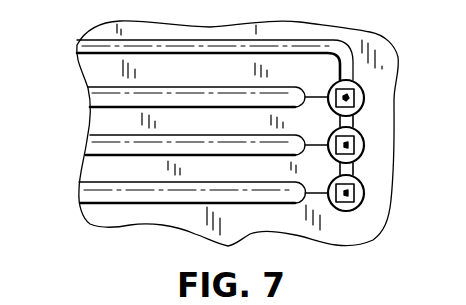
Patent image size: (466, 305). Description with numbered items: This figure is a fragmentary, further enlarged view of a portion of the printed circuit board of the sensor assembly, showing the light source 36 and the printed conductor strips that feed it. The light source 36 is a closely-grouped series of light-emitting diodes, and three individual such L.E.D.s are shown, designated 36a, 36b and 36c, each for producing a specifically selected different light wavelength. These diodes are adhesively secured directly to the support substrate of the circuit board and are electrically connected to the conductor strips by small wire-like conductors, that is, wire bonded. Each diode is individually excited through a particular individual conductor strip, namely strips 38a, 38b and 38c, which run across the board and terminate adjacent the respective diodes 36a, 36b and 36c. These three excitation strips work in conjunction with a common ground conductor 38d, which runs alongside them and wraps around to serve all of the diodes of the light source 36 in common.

The light source 36 is at (345, 212).
The light-emitting diode 36a is at (355, 187).
The light-emitting diode 36b is at (359, 137).
The light-emitting diode 36c is at (361, 88).
The conductor strip 38a is at (87, 200).
The conductor strip 38b is at (98, 151).
The conductor strip 38c is at (93, 104).
The common ground conductor 38d is at (90, 53).